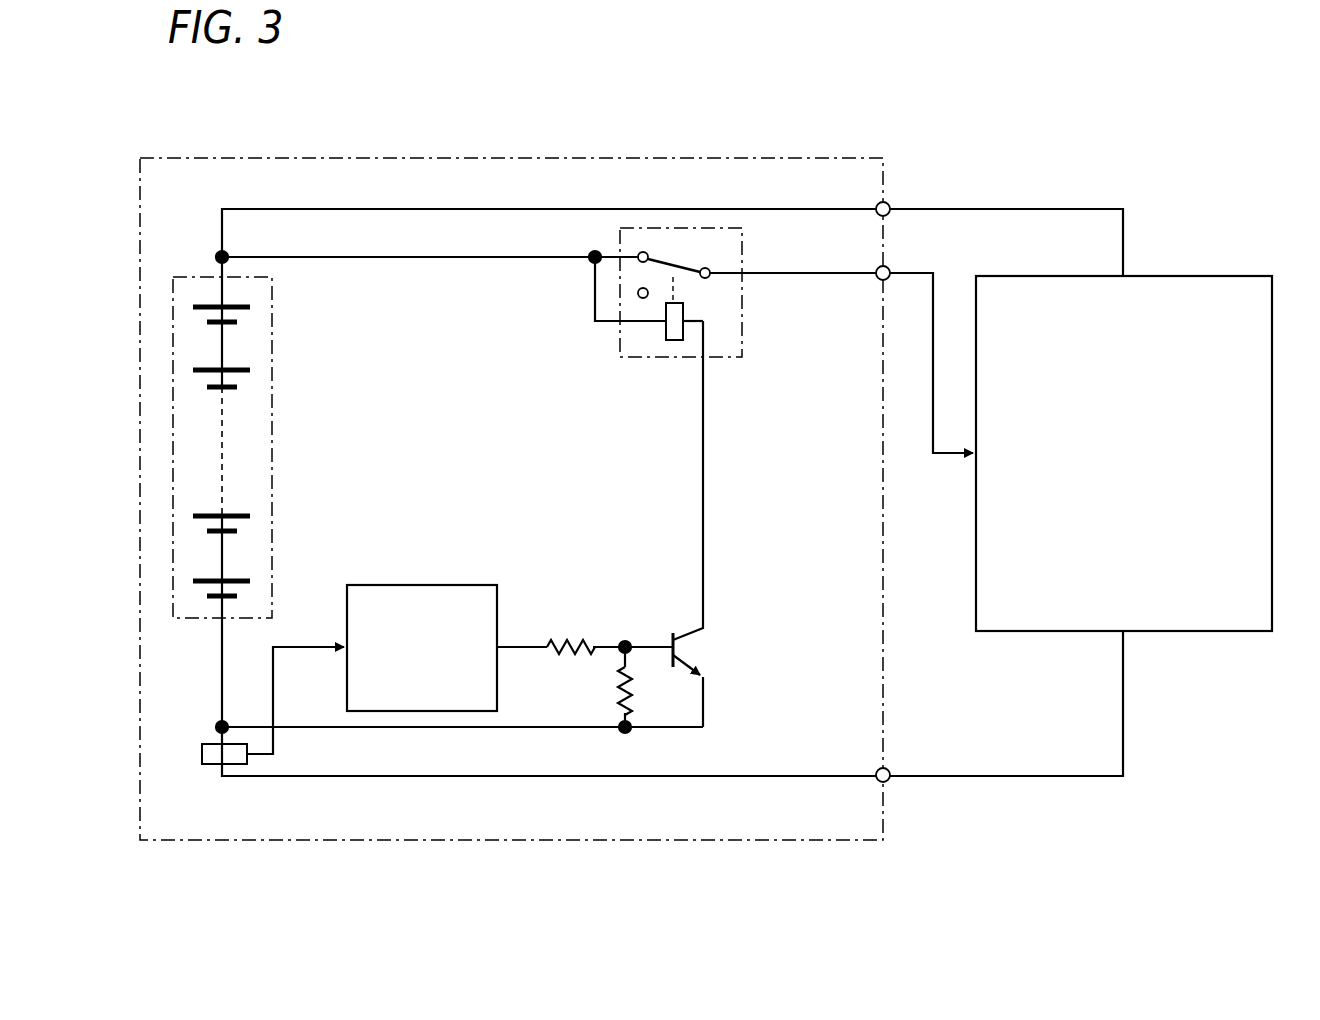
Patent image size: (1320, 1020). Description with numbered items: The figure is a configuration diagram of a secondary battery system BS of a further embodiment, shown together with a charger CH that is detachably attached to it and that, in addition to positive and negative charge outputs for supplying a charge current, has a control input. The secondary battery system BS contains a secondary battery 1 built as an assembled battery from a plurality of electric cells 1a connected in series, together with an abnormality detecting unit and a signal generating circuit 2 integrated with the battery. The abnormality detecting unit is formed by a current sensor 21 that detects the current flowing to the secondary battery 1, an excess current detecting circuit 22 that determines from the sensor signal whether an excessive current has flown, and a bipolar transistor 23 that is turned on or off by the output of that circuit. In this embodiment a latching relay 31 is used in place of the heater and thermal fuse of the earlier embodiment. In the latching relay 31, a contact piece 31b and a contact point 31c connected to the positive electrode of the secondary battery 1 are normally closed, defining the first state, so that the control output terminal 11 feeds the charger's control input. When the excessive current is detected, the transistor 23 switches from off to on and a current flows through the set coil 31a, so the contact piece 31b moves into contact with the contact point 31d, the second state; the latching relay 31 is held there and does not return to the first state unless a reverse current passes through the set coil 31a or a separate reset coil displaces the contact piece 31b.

The secondary battery 1 is at (270, 492).
The electric cell 1a is at (237, 322).
The signal generating circuit 2 is at (546, 385).
The control output terminal 11 is at (878, 285).
The current sensor 21 is at (212, 766).
The excess current detecting circuit 22 is at (425, 585).
The bipolar transistor 23 is at (690, 632).
The latching relay 31 is at (675, 317).
The set coil 31a is at (672, 342).
The contact piece 31b is at (662, 263).
The contact point 31c is at (641, 250).
The contact point 31d is at (637, 293).
The secondary battery system BS is at (416, 158).
The charger CH is at (1183, 276).